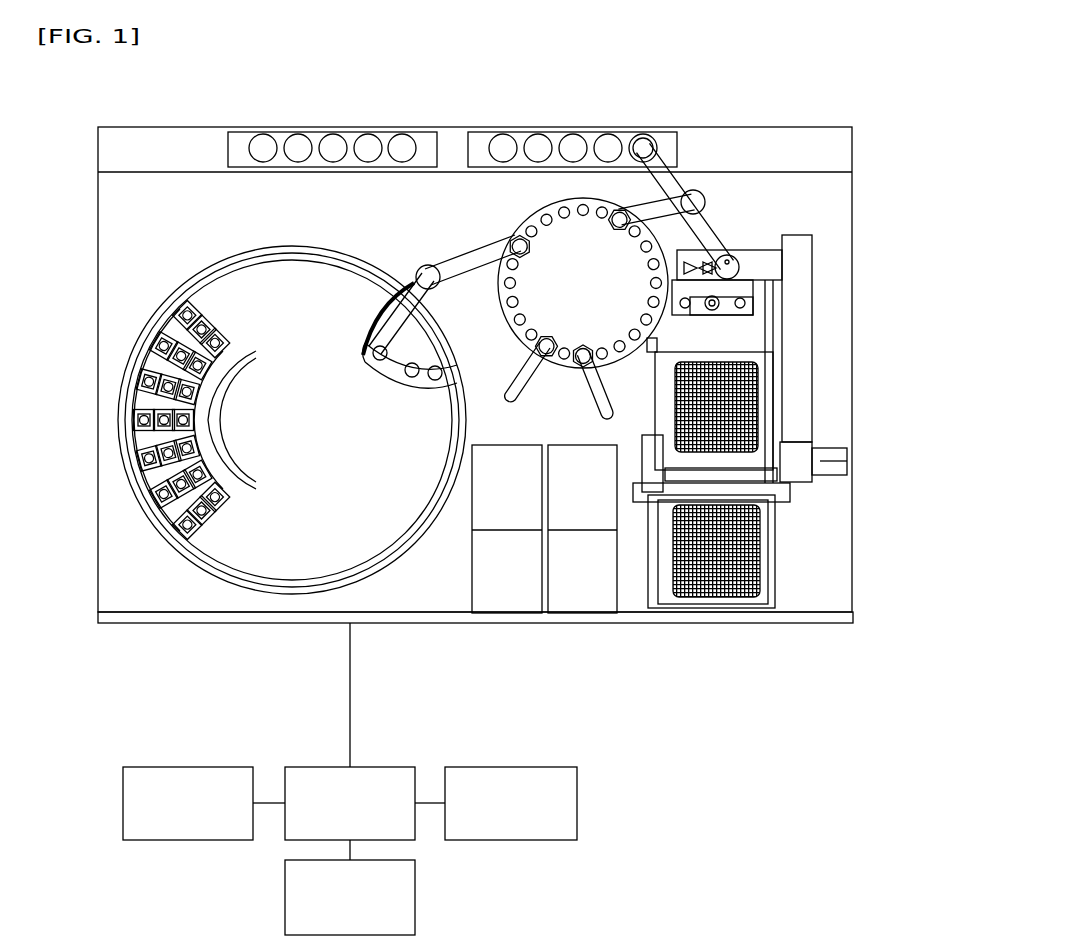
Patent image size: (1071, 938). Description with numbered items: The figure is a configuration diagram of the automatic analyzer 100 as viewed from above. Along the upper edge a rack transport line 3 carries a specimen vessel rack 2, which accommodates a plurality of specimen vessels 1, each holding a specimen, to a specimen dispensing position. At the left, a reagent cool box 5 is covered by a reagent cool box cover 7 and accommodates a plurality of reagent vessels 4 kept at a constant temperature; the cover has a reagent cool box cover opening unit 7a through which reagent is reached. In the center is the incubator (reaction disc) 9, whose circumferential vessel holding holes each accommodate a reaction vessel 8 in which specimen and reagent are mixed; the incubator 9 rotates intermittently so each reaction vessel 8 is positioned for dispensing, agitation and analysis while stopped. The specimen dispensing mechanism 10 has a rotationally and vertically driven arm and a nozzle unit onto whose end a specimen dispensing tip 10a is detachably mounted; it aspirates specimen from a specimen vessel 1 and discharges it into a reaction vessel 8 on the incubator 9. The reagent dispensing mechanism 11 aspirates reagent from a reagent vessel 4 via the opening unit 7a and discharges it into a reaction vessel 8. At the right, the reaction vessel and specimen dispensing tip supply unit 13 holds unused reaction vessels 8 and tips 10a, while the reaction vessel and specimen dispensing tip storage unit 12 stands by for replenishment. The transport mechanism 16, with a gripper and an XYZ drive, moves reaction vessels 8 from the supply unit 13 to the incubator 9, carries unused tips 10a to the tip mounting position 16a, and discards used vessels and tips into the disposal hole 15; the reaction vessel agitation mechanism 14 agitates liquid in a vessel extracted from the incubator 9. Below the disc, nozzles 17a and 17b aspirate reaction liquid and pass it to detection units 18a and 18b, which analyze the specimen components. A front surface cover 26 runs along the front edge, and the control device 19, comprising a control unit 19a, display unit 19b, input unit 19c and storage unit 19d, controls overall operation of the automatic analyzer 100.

The specimen vessel 1 is at (300, 135).
The specimen vessel rack 2 is at (236, 135).
The rack transport line 3 is at (138, 137).
The reagent vessel 4 is at (136, 383).
The reagent cool box 5 is at (226, 246).
The reagent cool box cover 7 is at (250, 557).
The reagent cool box cover opening unit 7a is at (392, 388).
The reaction vessel 8 is at (572, 200).
The incubator (reaction disc) 9 is at (510, 209).
The specimen dispensing mechanism 10 is at (683, 180).
The specimen dispensing tip 10a is at (758, 380).
The reagent dispensing mechanism 11 is at (455, 285).
The reaction vessel and specimen dispensing tip storage unit 12 is at (768, 552).
The reaction vessel and specimen dispensing tip supply unit 13 is at (768, 420).
The reaction vessel agitation mechanism 14 is at (712, 324).
The disposal hole 15 is at (718, 257).
The transport mechanism 16 is at (770, 252).
The tip mounting position 16a is at (688, 312).
The nozzle 17a is at (510, 402).
The nozzle 17b is at (603, 417).
The detection unit 18a is at (483, 608).
The detection unit 18b is at (570, 608).
The control device 19 is at (594, 892).
The control unit 19a is at (322, 765).
The display unit 19b is at (180, 840).
The input unit 19c is at (415, 900).
The storage unit 19d is at (580, 798).
The front surface cover 26 is at (853, 623).
The automatic analyzer 100 is at (690, 713).